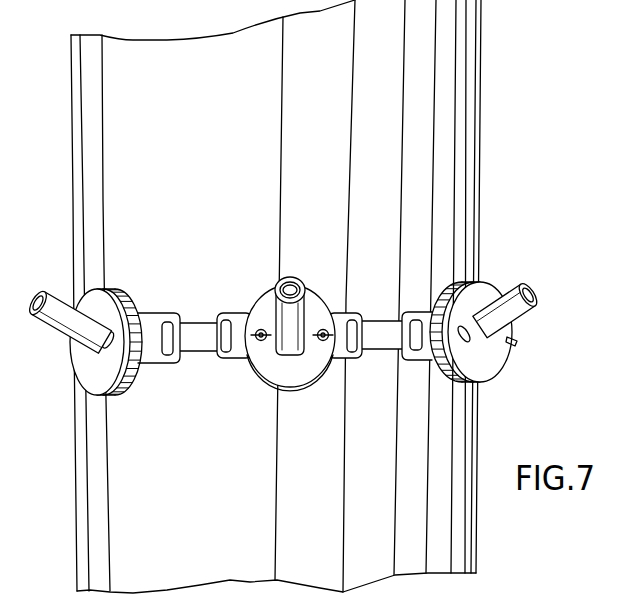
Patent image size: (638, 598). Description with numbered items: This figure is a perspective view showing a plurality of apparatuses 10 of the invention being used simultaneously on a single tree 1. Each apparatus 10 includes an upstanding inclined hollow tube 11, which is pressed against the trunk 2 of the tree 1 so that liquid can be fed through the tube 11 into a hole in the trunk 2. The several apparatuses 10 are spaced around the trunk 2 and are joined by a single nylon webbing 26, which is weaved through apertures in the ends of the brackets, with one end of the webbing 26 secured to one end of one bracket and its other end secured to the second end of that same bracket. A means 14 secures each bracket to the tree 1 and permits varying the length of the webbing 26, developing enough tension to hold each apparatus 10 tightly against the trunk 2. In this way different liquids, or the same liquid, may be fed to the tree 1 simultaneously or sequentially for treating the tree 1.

The tree 1 is at (480, 286).
The trunk 2 is at (252, 296).
The apparatus 10 is at (294, 367).
The upstanding inclined hollow tube 11 is at (308, 281).
The means for securing the bracket body to the tree 14 is at (282, 255).
The nylon webbing 26 is at (269, 277).